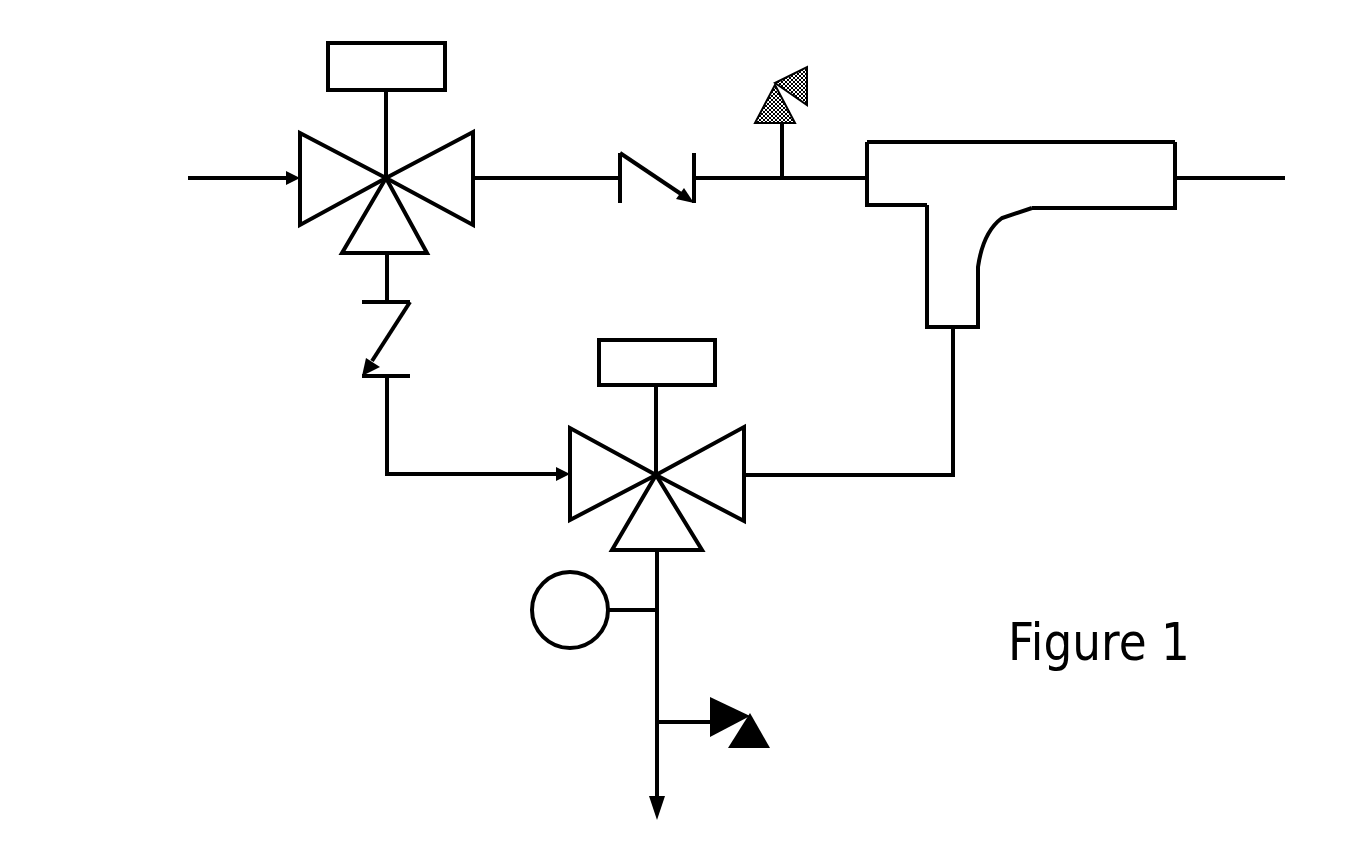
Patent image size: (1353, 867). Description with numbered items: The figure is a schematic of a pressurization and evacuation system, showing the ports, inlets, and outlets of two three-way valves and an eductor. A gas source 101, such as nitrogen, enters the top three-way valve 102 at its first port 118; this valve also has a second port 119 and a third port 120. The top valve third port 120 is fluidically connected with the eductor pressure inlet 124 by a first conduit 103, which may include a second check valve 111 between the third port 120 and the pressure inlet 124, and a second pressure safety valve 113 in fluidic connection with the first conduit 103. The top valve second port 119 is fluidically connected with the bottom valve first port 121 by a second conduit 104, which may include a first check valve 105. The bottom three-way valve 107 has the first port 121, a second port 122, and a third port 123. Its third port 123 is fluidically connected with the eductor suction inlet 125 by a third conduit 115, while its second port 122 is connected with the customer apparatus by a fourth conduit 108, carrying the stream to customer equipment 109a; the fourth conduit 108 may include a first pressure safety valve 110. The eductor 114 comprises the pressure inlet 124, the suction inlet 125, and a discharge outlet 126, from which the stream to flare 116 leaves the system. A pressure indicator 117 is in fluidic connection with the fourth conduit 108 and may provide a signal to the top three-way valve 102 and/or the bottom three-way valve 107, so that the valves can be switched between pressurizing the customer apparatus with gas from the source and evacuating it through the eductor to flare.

The gas source 101 is at (214, 178).
The top 3-way valve 102 is at (386, 110).
The first conduit 103 is at (546, 159).
The second conduit 104 is at (412, 277).
The first check valve 105 is at (436, 391).
The bottom 3-way valve 107 is at (657, 407).
The fourth conduit 108 is at (689, 674).
The stream to customer equipment 109a is at (660, 828).
The first pressure safety valve 110 is at (739, 722).
The second check valve 111 is at (701, 160).
The second pressure safety valve 113 is at (787, 116).
The eductor 114 is at (1021, 216).
The third conduit 115 is at (848, 401).
The stream to flare 116 is at (1256, 178).
The pressure indicator 117 is at (594, 610).
The top 3-way valve first port 118 is at (343, 179).
The top 3-way valve second port 119 is at (384, 215).
The top 3-way valve third port 120 is at (429, 178).
The bottom 3-way valve first port 121 is at (613, 474).
The bottom 3-way valve second port 122 is at (657, 512).
The bottom 3-way valve third port 123 is at (700, 474).
The eductor pressure inlet 124 is at (897, 173).
The eductor suction inlet 125 is at (979, 266).
The eductor discharge outlet 126 is at (1103, 175).